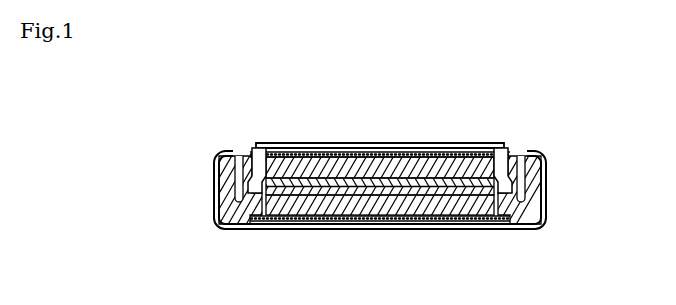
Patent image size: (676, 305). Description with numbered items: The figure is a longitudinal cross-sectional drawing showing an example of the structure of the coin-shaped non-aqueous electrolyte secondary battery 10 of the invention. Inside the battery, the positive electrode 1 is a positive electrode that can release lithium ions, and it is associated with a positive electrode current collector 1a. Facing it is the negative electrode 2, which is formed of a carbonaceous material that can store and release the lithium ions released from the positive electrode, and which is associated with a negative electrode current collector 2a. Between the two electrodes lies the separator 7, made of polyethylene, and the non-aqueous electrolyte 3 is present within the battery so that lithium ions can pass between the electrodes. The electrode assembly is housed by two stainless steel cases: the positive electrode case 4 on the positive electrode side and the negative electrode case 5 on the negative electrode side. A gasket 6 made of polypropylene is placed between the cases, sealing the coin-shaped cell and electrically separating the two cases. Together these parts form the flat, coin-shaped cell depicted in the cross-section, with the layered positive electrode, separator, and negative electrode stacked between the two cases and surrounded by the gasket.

The coin-shaped non-aqueous electrolyte secondary battery 10 is at (434, 126).
The positive electrode 1 is at (345, 222).
The positive electrode current collector 1a is at (297, 223).
The negative electrode 2 is at (408, 143).
The negative electrode current collector 2a is at (337, 154).
The non-aqueous electrolyte 3 is at (257, 146).
The positive electrode case 4 is at (420, 229).
The negative electrode case 5 is at (479, 155).
The gasket 6 is at (229, 224).
The separator 7 is at (453, 223).